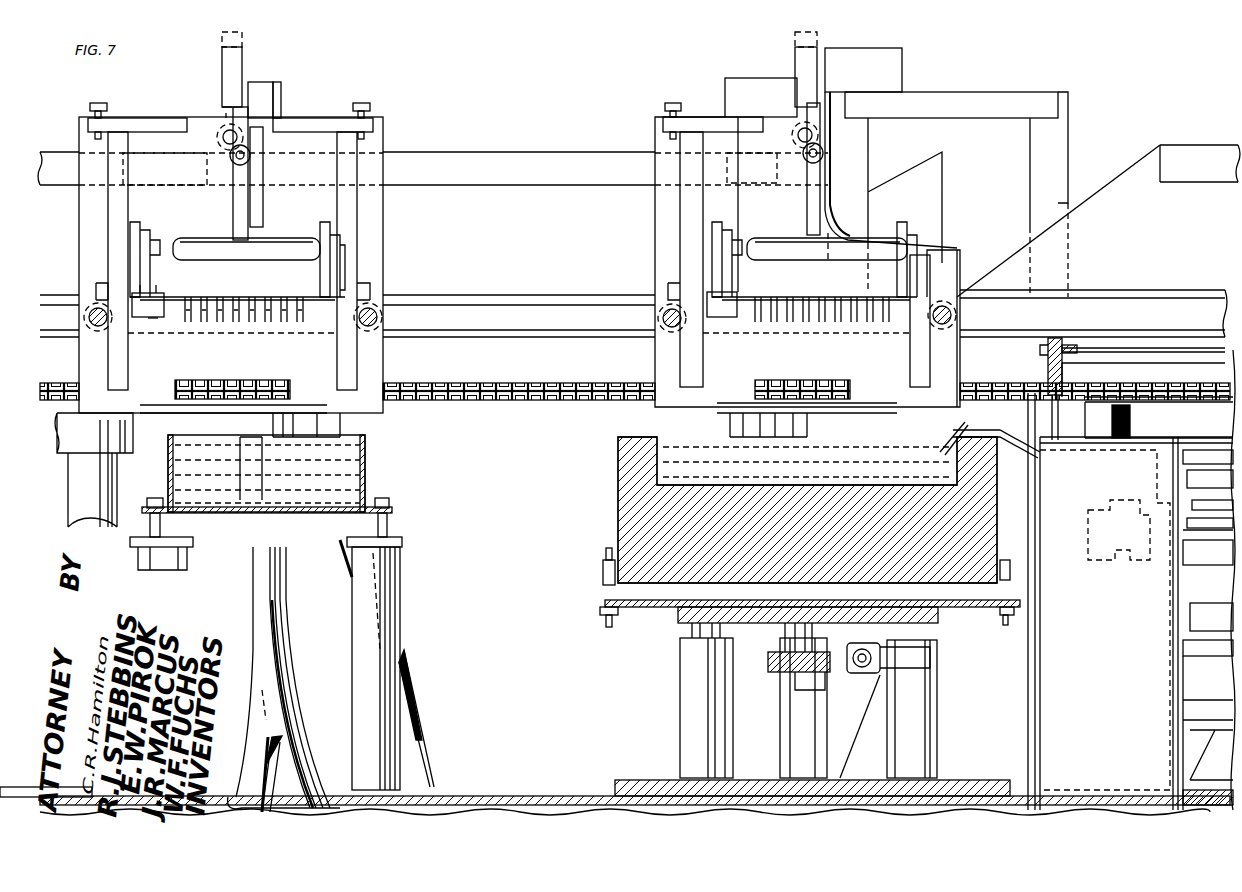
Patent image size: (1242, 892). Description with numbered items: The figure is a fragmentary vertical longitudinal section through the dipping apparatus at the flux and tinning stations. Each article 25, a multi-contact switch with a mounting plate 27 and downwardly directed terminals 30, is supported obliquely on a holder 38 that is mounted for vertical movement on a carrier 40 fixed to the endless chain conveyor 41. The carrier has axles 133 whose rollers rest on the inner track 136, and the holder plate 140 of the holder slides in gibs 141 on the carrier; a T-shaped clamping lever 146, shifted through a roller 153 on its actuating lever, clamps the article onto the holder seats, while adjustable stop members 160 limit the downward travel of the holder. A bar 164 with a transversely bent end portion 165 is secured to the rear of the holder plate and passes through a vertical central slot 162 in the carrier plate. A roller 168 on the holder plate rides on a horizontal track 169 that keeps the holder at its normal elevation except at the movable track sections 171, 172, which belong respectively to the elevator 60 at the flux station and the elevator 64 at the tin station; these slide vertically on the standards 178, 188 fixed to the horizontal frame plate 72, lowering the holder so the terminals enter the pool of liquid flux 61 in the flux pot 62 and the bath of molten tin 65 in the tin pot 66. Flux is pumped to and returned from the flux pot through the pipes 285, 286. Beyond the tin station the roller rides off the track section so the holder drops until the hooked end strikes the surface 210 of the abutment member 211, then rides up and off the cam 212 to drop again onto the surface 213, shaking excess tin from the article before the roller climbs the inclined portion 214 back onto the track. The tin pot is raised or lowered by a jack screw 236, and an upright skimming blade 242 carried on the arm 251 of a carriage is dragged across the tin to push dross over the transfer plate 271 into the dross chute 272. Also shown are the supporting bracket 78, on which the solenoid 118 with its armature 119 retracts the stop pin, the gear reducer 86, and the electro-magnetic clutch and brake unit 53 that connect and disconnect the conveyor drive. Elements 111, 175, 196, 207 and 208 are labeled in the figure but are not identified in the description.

The article 25 is at (185, 235).
The mounting plate 27 is at (305, 235).
The terminals 30 is at (262, 322).
The holder 38 is at (212, 108).
The carrier 40 is at (385, 410).
The endless chain conveyor 41 is at (522, 396).
The electro-magnetic clutch and brake unit 53 is at (1180, 558).
The elevator 60 is at (281, 97).
The liquid flux 61 is at (332, 473).
The flux pot 62 is at (365, 475).
The elevator 64 is at (722, 95).
The molten tin bath 65 is at (660, 466).
The tin pot 66 is at (650, 515).
The frame plate 72 is at (553, 796).
The supporting bracket 78 is at (1015, 420).
The gear reducer 86 is at (1200, 640).
The stop block 111 is at (1128, 422).
The solenoid 118 is at (1118, 650).
The armature 119 is at (1095, 530).
The axles 133 is at (383, 317).
The inner track 136 is at (528, 305).
The holder plate 140 is at (345, 182).
The gibs 141 is at (355, 260).
The clamping lever 146 is at (250, 250).
The roller 153 is at (250, 156).
The adjustable stop members 160 is at (365, 140).
The vertical central slot 162 is at (228, 317).
The bar 164 is at (242, 70).
The bent end portion 165 is at (242, 37).
The roller 168 is at (217, 140).
The track 169 is at (527, 175).
The movable track section 171 is at (165, 169).
The movable track section 172 is at (785, 171).
The guide 175 is at (152, 318).
The standard 178 is at (425, 760).
The standard 188 is at (735, 736).
The rail 196 is at (1112, 305).
The block 207 is at (265, 90).
The cam bar 208 is at (735, 78).
The surface 210 is at (885, 68).
The abutment member 211 is at (935, 97).
The cam 212 is at (940, 148).
The surface 213 is at (980, 90).
The inclined portion 214 is at (1115, 175).
The jack screw 236 is at (795, 645).
The skimming blade 242 is at (1058, 440).
The arm 251 is at (1070, 345).
The transfer plate 271 is at (955, 422).
The dross chute 272 is at (1050, 660).
The pipe 285 is at (265, 612).
The pipe 286 is at (268, 730).